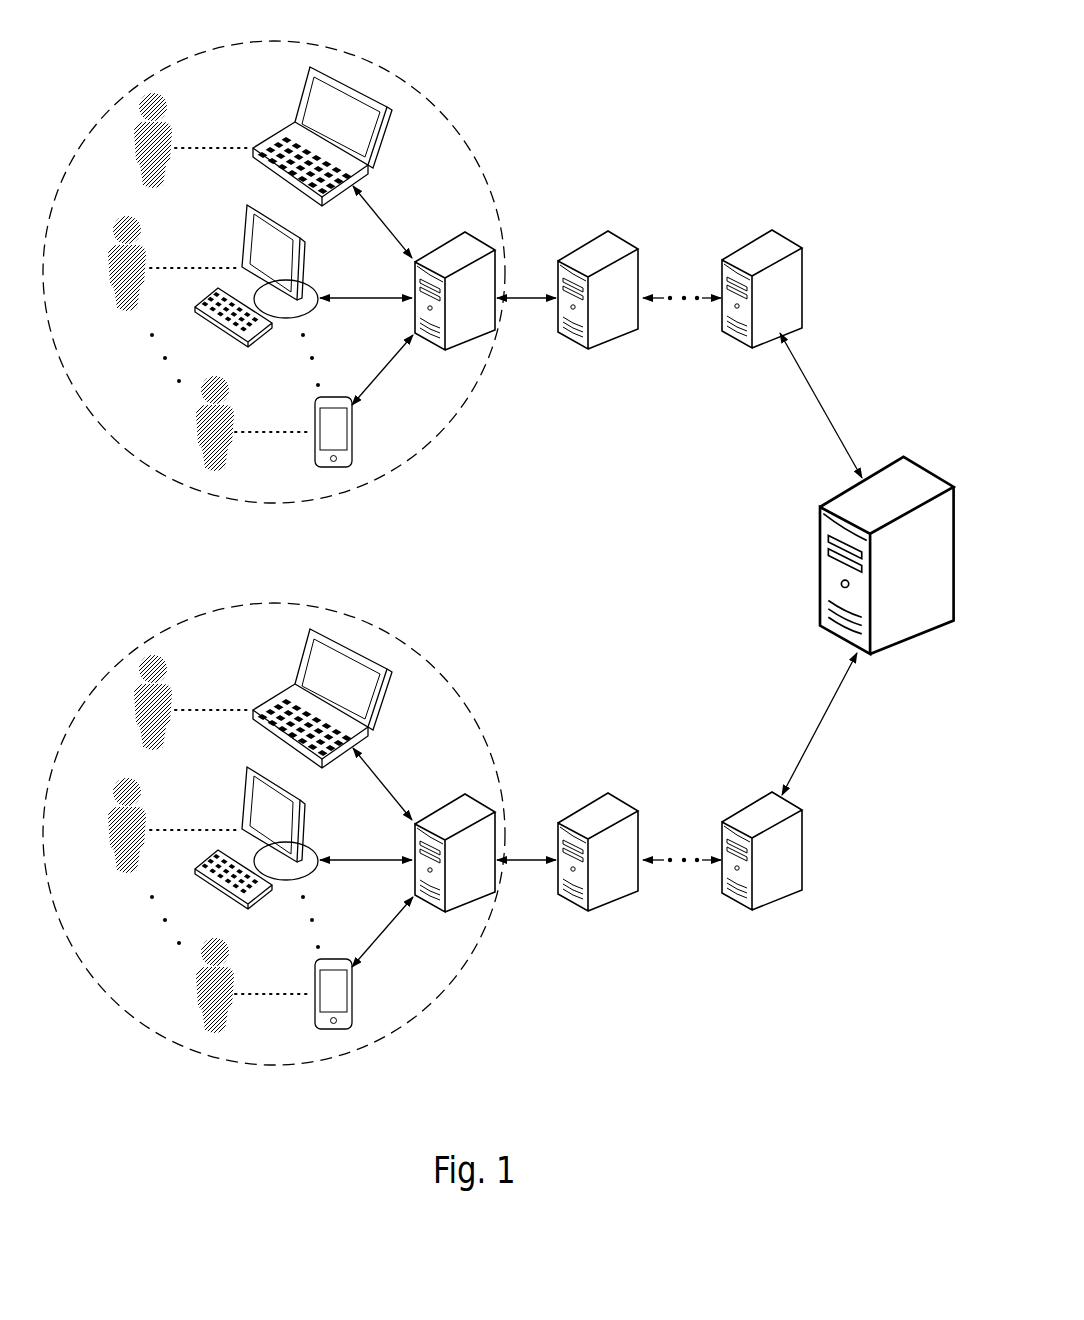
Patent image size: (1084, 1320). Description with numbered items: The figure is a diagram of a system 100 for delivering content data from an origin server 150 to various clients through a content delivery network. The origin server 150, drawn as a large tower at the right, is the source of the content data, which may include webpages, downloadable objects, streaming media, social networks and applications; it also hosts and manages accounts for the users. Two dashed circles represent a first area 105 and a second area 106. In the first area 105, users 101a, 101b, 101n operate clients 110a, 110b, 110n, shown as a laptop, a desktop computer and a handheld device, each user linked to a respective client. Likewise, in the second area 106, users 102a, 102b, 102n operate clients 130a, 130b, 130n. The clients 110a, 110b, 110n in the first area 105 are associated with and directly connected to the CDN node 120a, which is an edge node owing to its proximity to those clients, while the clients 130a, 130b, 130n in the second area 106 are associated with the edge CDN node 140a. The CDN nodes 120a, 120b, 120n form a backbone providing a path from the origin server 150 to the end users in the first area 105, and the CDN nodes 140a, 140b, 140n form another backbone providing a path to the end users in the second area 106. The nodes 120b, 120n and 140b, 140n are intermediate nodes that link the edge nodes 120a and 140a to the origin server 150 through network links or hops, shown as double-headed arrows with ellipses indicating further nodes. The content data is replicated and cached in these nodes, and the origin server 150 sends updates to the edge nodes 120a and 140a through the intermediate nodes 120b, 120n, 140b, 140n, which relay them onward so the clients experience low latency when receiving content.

The system 100 is at (648, 563).
The first area 105 is at (438, 107).
The second area 106 is at (438, 669).
The user 101a is at (168, 121).
The user 101b is at (140, 246).
The user 101n is at (198, 431).
The user 102a is at (168, 683).
The user 102b is at (140, 808).
The user 102n is at (198, 993).
The client 110a is at (383, 130).
The client 110b is at (307, 256).
The client 110n is at (354, 435).
The client 130a is at (383, 692).
The client 130b is at (307, 818).
The client 130n is at (354, 997).
The CDN node 120a is at (455, 236).
The CDN node 120b is at (577, 247).
The CDN node 120n is at (745, 246).
The CDN node 140a is at (455, 798).
The CDN node 140b is at (577, 809).
The CDN node 140n is at (745, 808).
The origin server 150 is at (912, 465).